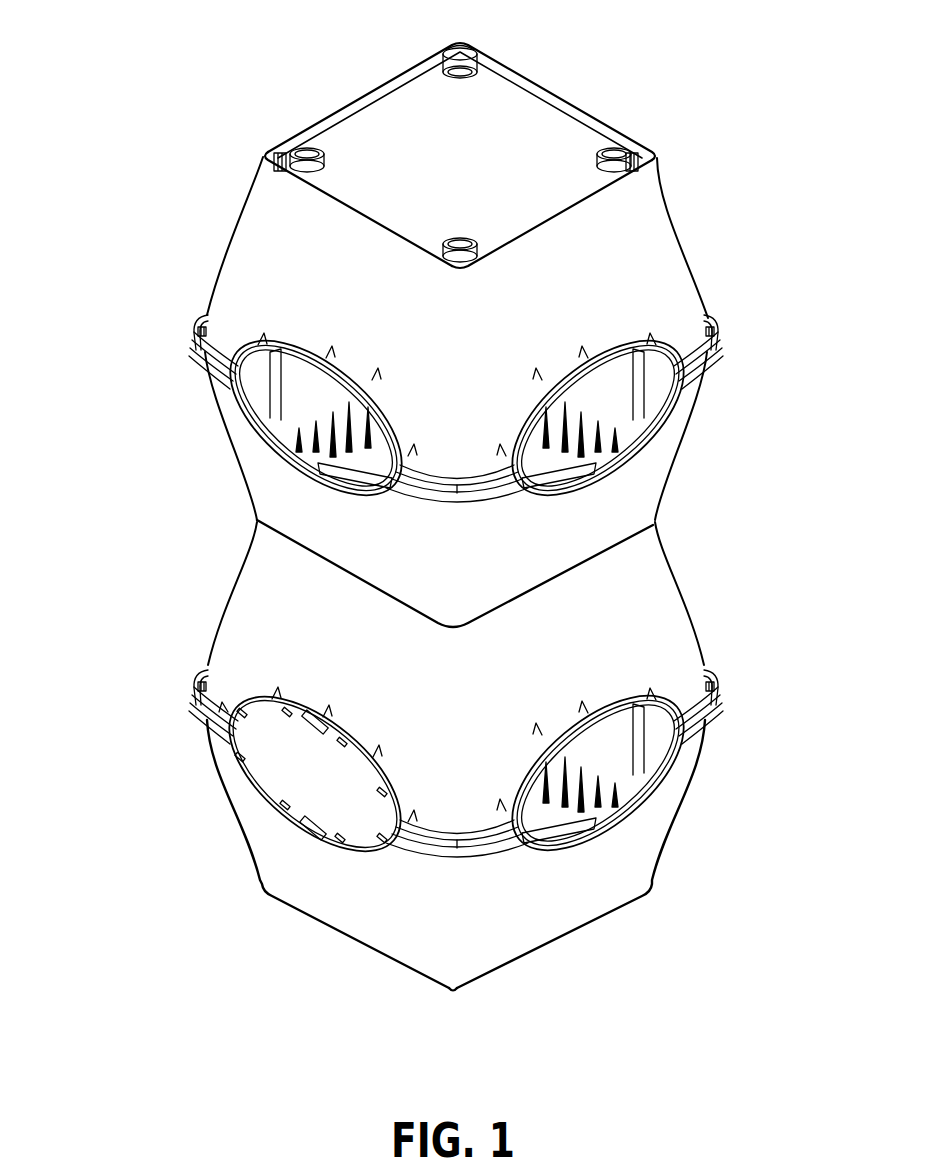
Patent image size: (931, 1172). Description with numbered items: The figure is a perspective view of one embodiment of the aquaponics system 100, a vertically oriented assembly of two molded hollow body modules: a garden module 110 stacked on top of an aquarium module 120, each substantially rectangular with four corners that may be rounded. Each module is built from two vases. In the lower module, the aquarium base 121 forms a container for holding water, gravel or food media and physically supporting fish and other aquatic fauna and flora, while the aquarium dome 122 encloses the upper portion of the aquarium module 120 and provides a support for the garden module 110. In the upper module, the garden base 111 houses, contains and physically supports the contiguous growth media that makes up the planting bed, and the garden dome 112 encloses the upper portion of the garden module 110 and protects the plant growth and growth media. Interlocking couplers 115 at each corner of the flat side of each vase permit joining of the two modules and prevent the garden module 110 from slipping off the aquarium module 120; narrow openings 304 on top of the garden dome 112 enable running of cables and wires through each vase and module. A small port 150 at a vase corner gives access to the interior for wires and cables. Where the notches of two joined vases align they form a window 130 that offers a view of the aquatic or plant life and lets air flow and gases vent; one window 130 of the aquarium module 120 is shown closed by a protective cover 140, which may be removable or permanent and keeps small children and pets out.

The aquaponics system 100 is at (695, 92).
The garden module 110 is at (713, 161).
The garden base 111 is at (257, 443).
The garden dome 112 is at (253, 253).
The interlocking couplers 115 is at (440, 68).
The aquarium module 120 is at (713, 515).
The aquarium base 121 is at (263, 843).
The aquarium dome 122 is at (248, 617).
The window 130 is at (285, 387).
The protective cover 140 is at (225, 738).
The small port 150 is at (453, 989).
The narrow opening 304 is at (473, 43).